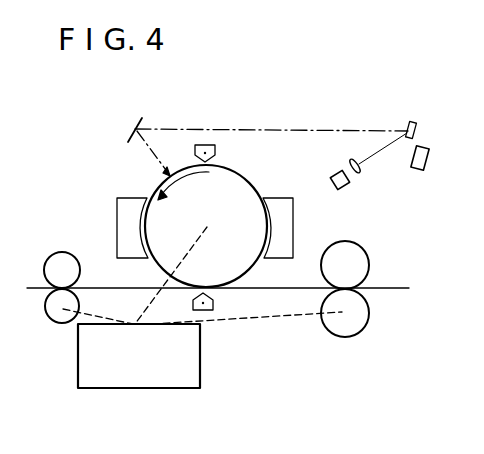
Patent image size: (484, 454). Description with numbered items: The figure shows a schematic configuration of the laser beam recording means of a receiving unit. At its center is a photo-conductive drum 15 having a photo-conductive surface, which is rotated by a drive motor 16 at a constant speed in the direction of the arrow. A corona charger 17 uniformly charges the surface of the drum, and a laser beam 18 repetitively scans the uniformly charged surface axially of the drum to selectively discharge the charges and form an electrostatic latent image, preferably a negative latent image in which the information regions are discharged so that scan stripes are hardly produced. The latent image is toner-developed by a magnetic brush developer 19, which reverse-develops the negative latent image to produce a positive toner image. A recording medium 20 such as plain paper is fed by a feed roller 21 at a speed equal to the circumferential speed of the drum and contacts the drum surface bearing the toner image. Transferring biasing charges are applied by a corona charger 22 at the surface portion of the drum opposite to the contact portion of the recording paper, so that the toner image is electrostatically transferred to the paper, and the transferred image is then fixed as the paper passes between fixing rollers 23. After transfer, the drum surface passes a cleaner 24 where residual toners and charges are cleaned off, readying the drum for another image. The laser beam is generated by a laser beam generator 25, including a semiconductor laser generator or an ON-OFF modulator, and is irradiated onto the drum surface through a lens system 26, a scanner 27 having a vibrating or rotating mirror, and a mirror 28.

The photo-conductive drum 15 is at (246, 186).
The drive motor 16 is at (165, 389).
The corona charger 17 is at (216, 150).
The laser beam 18 is at (160, 169).
The magnetic brush developer 19 is at (117, 228).
The recording medium 20 is at (272, 289).
The feed roller 21 is at (62, 324).
The corona charger 22 is at (205, 311).
The fixing rollers 23 is at (370, 312).
The cleaner 24 is at (293, 212).
The laser beam generator 25 is at (348, 188).
The lens system 26 is at (361, 171).
The scanner 27 is at (412, 120).
The mirror 28 is at (132, 127).